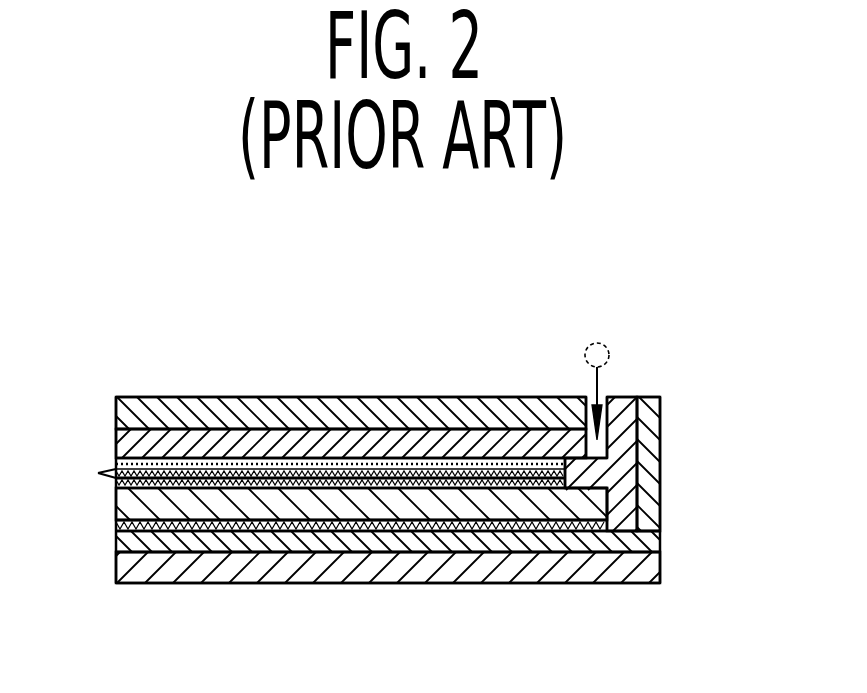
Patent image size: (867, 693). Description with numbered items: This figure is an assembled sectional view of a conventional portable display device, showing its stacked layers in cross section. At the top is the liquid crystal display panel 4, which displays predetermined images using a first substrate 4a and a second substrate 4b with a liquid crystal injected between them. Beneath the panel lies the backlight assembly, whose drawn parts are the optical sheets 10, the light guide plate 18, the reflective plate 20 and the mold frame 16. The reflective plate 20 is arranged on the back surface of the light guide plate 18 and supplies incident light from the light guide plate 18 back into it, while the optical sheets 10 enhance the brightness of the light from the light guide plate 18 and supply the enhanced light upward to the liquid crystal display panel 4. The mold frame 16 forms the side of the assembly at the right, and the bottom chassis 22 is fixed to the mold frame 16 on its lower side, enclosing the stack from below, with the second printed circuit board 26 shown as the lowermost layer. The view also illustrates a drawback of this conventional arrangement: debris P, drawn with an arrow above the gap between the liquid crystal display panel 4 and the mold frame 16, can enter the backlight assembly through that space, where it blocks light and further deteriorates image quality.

The liquid crystal display panel 4 is at (377, 300).
The first substrate 4a is at (243, 397).
The second substrate 4b is at (333, 465).
The optical sheets 10 is at (85, 465).
The mold frame 16 is at (640, 428).
The light guide plate 18 is at (440, 507).
The reflective plate 20 is at (339, 529).
The bottom chassis 22 is at (660, 517).
The second printed circuit board 26 is at (660, 562).
The debris P is at (611, 382).